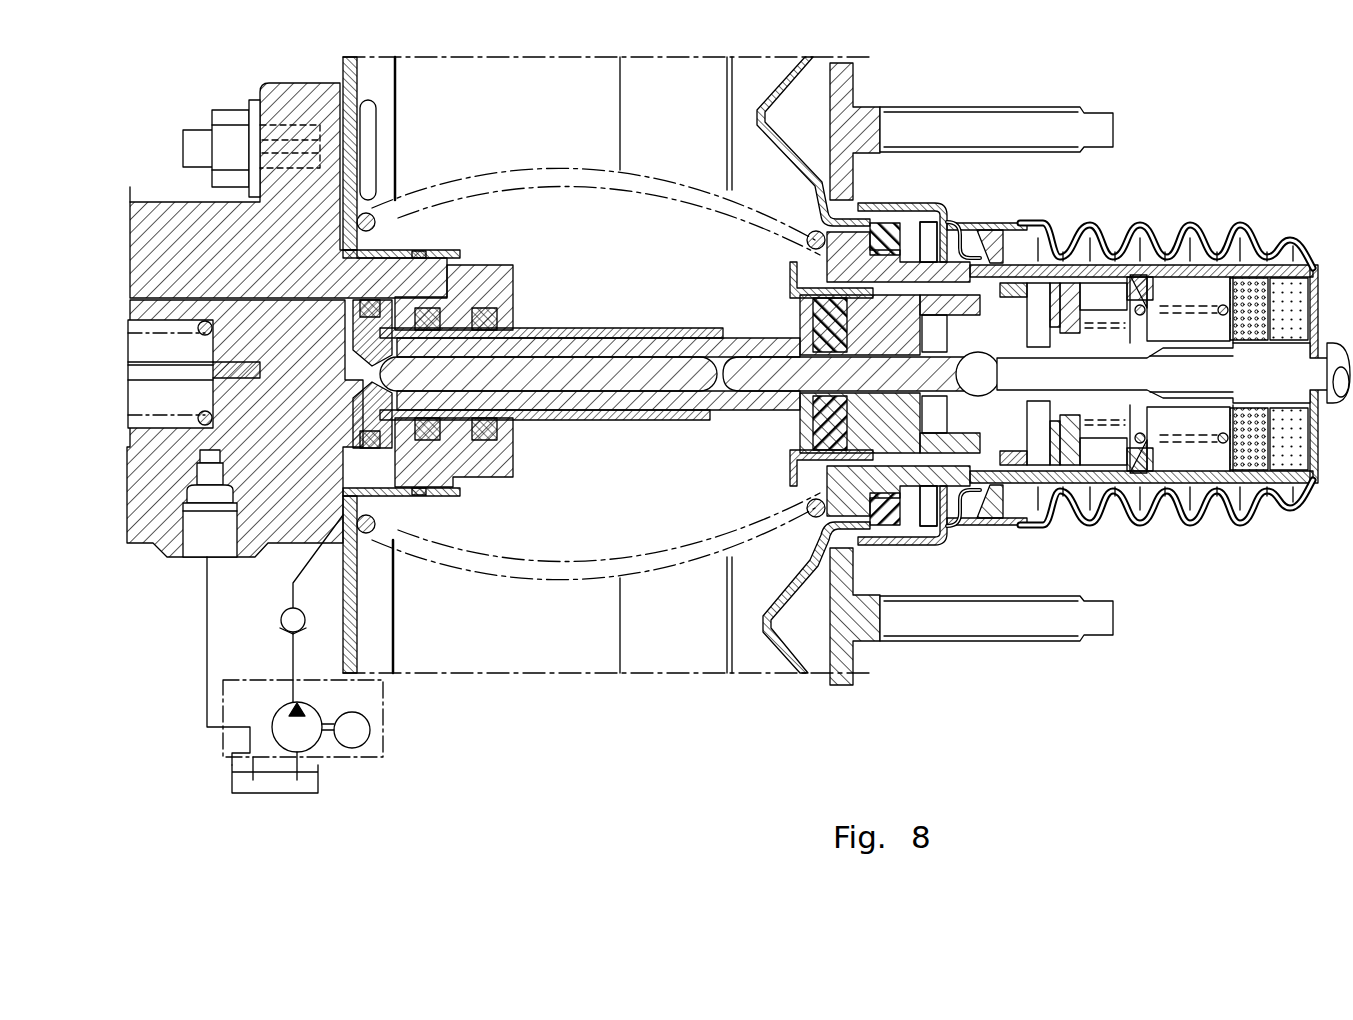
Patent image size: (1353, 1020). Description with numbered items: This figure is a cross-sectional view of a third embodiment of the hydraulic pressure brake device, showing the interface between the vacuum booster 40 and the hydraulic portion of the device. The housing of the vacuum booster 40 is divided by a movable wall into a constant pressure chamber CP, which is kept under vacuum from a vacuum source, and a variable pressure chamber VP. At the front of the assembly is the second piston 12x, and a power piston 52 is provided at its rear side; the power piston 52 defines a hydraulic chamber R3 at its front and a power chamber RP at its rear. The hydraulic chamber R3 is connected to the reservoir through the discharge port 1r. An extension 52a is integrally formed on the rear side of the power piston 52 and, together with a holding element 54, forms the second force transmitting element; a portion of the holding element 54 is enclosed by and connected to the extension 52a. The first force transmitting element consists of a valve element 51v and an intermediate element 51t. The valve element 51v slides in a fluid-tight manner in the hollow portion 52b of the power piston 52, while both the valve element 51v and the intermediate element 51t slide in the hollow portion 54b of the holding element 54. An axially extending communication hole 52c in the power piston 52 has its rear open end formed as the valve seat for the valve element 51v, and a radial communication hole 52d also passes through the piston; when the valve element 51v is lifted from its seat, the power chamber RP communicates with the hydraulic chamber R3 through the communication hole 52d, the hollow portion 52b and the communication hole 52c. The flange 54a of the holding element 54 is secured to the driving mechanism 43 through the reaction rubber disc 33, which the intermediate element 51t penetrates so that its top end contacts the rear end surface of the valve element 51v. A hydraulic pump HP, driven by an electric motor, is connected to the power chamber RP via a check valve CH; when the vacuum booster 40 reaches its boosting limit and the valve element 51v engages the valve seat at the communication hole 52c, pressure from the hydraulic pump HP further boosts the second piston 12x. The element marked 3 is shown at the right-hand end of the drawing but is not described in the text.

The hydraulic chamber R3 is at (350, 317).
The power piston 52 is at (388, 298).
The communication hole 52c is at (462, 253).
The hollow portion 52b is at (520, 336).
The extension 52a is at (632, 328).
The holding element 54 is at (740, 330).
The flange 54a is at (806, 320).
The hollow portion 54b is at (693, 392).
The reaction rubber disc 33 is at (863, 207).
The vacuum booster 40 is at (1143, 217).
The valve element 51v is at (610, 390).
The intermediate element 51t is at (763, 388).
The communication hole 52d is at (475, 440).
The power chamber RP is at (430, 492).
The driving mechanism 43 is at (907, 473).
The release fork 3 is at (1337, 412).
The second piston 12x is at (182, 440).
The discharge port 1r is at (217, 558).
The check valve CH is at (282, 610).
The hydraulic pump HP is at (286, 712).
The constant pressure chamber CP is at (488, 650).
The variable pressure chamber VP is at (810, 650).